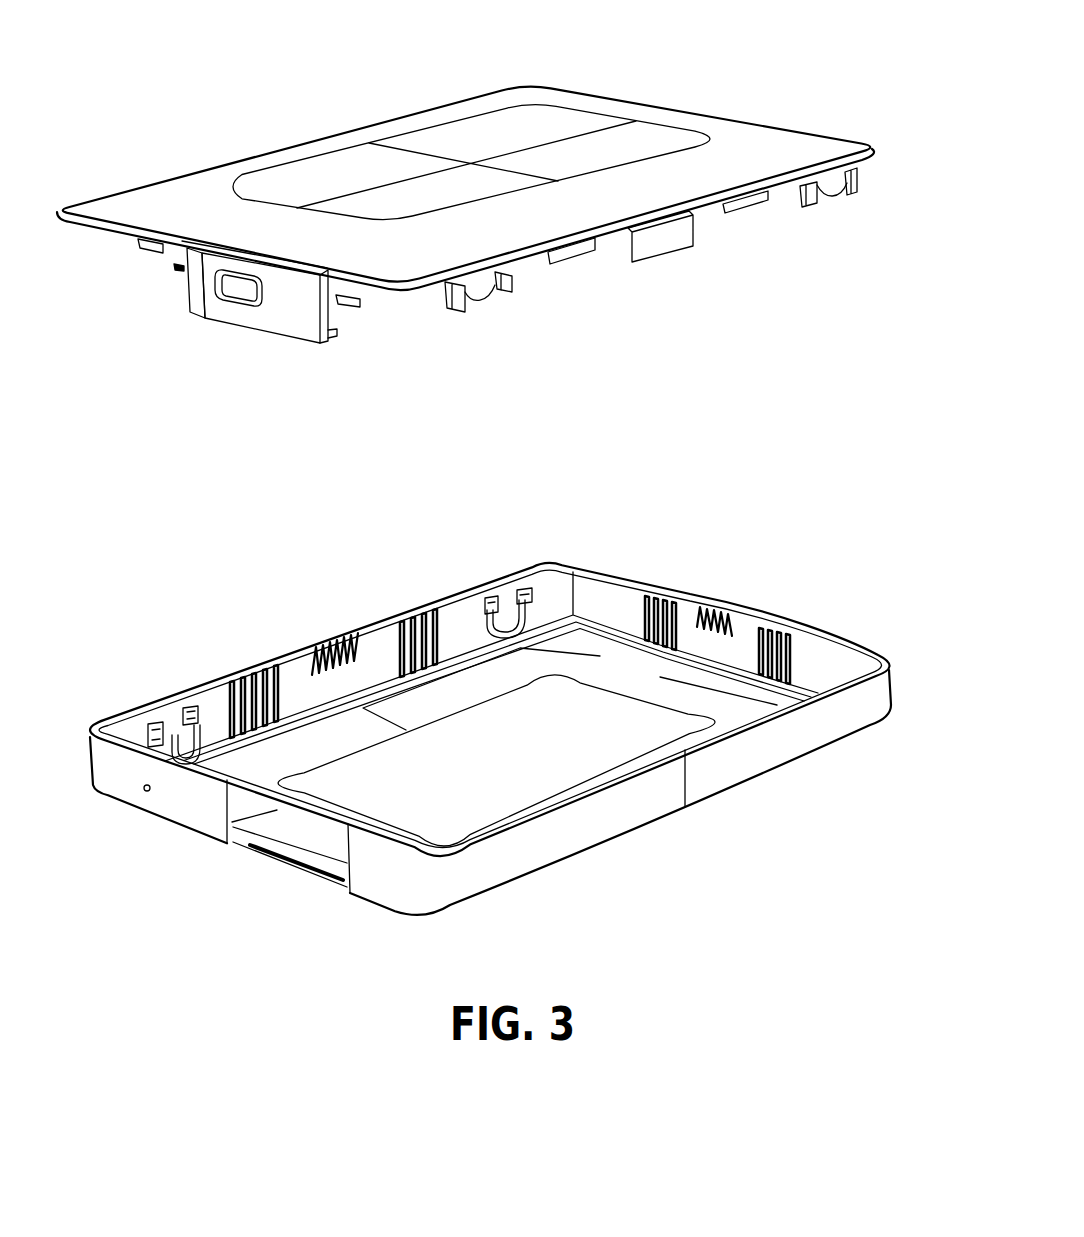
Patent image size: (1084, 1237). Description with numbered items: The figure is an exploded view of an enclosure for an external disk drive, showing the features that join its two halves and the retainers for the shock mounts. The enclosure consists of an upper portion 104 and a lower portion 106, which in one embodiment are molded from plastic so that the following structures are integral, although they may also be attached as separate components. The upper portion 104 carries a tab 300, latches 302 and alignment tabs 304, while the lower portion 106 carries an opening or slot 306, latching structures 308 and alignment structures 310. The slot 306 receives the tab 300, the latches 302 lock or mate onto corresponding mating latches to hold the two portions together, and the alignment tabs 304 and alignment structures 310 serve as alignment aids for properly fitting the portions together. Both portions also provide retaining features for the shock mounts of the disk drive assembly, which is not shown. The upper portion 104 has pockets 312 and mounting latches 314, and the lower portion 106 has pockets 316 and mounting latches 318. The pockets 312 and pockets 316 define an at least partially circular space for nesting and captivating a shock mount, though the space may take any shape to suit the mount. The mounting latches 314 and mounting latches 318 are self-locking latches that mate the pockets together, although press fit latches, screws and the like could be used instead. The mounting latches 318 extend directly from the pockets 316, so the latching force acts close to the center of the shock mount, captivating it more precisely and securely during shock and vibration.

The upper portion 104 is at (638, 103).
The lower portion 106 is at (790, 763).
The tab 300 is at (256, 330).
The latches 302 is at (177, 268).
The alignment tabs 304 is at (147, 252).
The slot 306 is at (290, 855).
The latching structures 308 is at (335, 690).
The alignment structures 310 is at (243, 678).
The pockets 312 is at (478, 296).
The mounting latches 314 is at (450, 312).
The pockets 316 is at (180, 742).
The mounting latches 318 is at (150, 733).